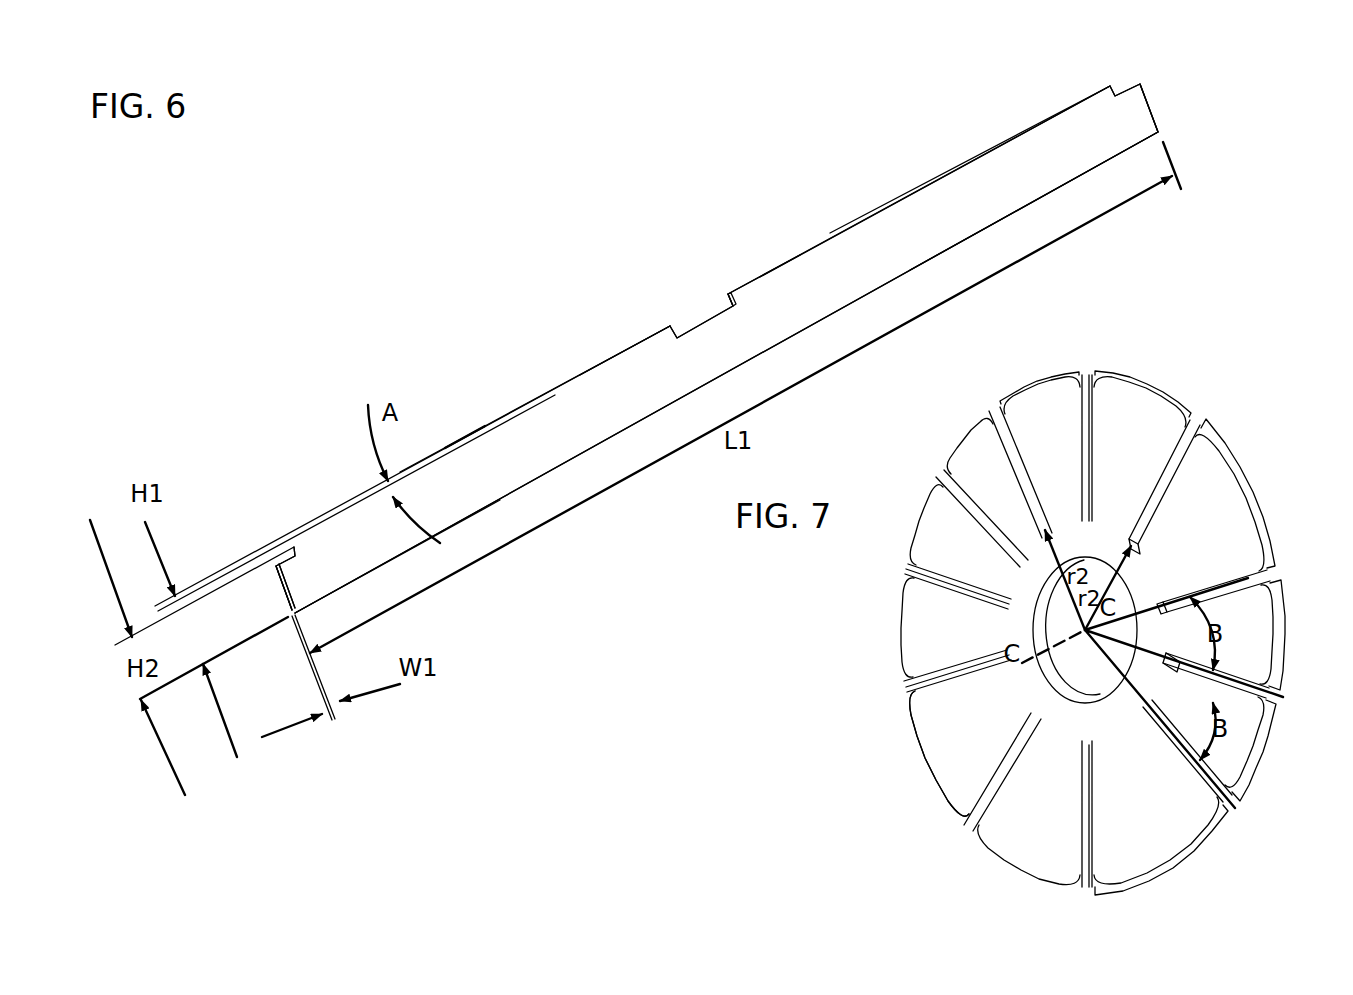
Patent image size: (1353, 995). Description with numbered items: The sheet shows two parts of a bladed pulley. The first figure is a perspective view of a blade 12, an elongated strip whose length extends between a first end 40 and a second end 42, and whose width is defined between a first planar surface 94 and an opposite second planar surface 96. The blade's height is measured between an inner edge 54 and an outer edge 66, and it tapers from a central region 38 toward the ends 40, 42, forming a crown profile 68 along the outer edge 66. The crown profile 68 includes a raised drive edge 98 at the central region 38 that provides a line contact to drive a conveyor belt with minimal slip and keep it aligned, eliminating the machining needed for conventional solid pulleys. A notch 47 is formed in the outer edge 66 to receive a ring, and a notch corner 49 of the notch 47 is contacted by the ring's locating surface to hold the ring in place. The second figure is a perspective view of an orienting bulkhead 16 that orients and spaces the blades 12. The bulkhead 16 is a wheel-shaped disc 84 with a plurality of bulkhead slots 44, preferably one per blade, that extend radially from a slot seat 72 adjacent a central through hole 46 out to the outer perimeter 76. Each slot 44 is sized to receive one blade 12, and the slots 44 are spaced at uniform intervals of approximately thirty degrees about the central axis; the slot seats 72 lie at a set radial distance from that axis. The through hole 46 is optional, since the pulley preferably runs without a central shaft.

In FIG. 6, the blade 12 is at (417, 340).
In FIG. 6, the central region 38 is at (572, 379).
In FIG. 6, the first end 40 is at (312, 565).
In FIG. 6, the second end 42 is at (1132, 118).
In FIG. 6, the notch 47 is at (707, 321).
In FIG. 6, the notch corner 49 is at (728, 297).
In FIG. 6, the inner edge 54 is at (838, 311).
In FIG. 6, the outer edge 66 is at (815, 246).
In FIG. 6, the crown profile 68 is at (890, 165).
In FIG. 6, the first planar surface 94 is at (317, 580).
In FIG. 6, the second planar surface 96 is at (283, 592).
In FIG. 6, the drive edge 98 is at (615, 355).
In FIG. 7, the orienting bulkhead 16 is at (1110, 633).
In FIG. 7, the bulkhead slot 44 is at (1250, 576).
In FIG. 7, the central through hole 46 is at (1037, 615).
In FIG. 7, the slot seat 72 is at (1164, 599).
In FIG. 7, the outer perimeter 76 is at (1218, 483).
In FIG. 7, the wheel-shaped disc 84 is at (962, 737).